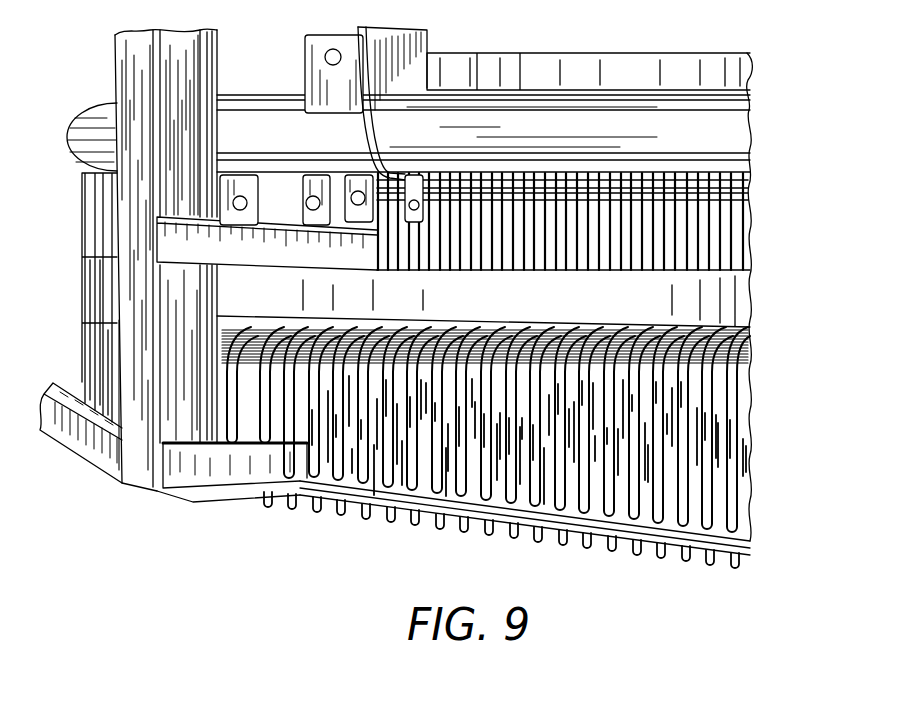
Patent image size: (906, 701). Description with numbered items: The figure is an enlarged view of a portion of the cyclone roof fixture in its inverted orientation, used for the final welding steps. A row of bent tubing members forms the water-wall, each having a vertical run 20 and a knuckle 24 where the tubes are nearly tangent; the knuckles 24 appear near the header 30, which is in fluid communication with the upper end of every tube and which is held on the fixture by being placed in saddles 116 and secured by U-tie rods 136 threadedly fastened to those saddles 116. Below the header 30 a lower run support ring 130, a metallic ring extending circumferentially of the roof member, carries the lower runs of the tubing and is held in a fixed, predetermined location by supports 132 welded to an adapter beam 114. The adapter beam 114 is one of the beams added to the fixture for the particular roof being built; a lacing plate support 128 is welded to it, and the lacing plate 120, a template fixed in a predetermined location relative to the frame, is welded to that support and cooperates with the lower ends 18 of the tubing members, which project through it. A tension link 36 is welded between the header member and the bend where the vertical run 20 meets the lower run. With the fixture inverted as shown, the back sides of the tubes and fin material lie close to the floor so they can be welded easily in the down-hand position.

The lower end 18 is at (733, 563).
The vertical run 20 is at (733, 423).
The knuckle 24 is at (718, 232).
The header 30 is at (730, 115).
The tension link 36 is at (88, 310).
The adapter beam 114 is at (133, 480).
The saddle 116 is at (427, 30).
The lacing plate 120 is at (750, 540).
The lacing plate support 128 is at (217, 497).
The lower run support ring 130 is at (642, 316).
The support 132 is at (315, 262).
The U-tie rod 136 is at (368, 140).